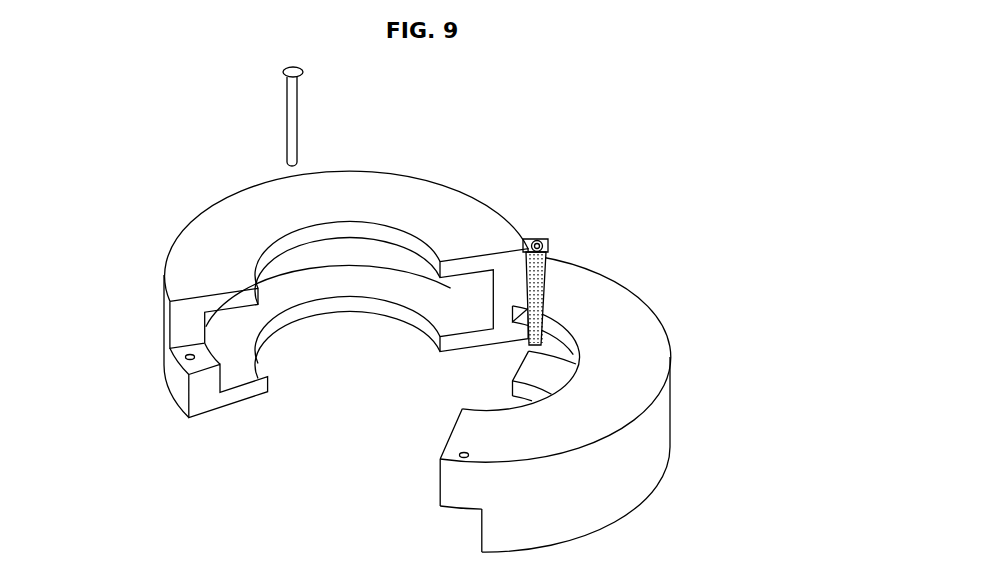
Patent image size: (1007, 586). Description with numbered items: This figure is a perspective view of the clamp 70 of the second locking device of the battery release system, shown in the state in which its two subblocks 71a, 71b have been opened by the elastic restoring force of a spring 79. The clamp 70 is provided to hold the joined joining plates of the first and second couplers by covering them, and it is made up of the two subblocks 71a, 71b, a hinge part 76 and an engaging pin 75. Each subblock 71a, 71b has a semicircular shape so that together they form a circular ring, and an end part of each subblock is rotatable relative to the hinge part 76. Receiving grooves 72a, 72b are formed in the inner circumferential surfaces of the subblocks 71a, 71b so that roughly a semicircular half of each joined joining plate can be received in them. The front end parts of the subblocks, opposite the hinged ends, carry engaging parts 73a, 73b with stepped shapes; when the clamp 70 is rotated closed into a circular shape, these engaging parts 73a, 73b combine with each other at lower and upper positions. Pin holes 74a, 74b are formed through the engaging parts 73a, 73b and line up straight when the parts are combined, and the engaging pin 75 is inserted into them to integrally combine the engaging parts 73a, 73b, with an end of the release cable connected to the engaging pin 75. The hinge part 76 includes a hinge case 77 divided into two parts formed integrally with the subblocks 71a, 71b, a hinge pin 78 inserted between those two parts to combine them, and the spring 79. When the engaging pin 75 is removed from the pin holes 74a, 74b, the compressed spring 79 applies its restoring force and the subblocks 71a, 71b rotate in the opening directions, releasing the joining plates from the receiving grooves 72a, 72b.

The clamp 70 is at (642, 264).
The subblock 71a is at (360, 185).
The subblock 71b is at (640, 373).
The receiving groove 72a is at (333, 280).
The receiving groove 72b is at (515, 352).
The engaging part 73a is at (227, 362).
The engaging part 73b is at (480, 505).
The pin hole 74a is at (190, 357).
The pin hole 74b is at (462, 452).
The engaging pin 75 is at (293, 115).
The hinge part 76 is at (552, 236).
The hinge case 77 is at (546, 240).
The hinge pin 78 is at (524, 240).
The spring 79 is at (547, 298).